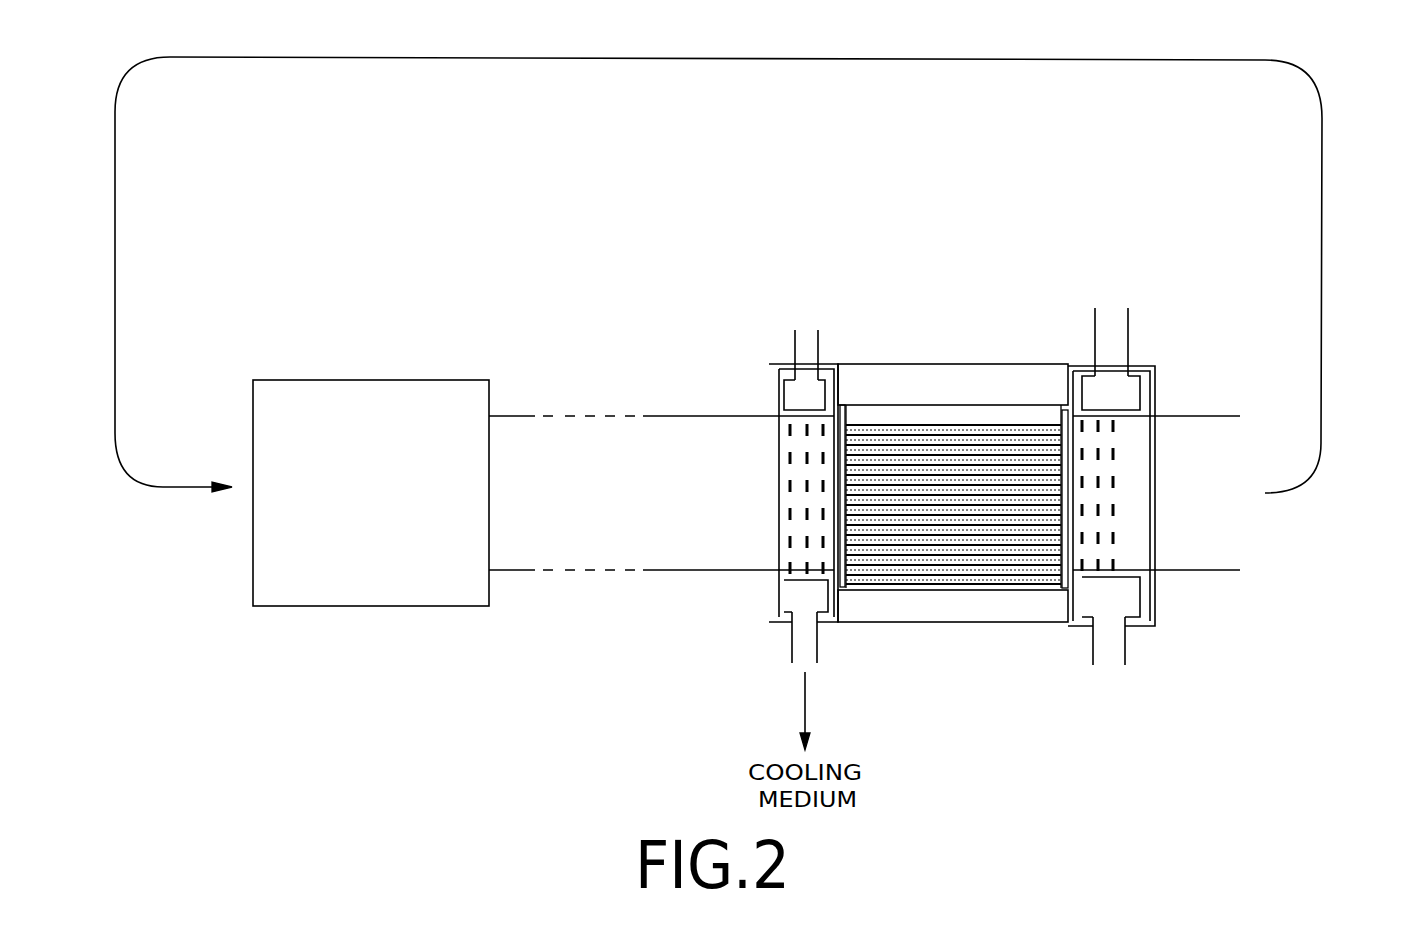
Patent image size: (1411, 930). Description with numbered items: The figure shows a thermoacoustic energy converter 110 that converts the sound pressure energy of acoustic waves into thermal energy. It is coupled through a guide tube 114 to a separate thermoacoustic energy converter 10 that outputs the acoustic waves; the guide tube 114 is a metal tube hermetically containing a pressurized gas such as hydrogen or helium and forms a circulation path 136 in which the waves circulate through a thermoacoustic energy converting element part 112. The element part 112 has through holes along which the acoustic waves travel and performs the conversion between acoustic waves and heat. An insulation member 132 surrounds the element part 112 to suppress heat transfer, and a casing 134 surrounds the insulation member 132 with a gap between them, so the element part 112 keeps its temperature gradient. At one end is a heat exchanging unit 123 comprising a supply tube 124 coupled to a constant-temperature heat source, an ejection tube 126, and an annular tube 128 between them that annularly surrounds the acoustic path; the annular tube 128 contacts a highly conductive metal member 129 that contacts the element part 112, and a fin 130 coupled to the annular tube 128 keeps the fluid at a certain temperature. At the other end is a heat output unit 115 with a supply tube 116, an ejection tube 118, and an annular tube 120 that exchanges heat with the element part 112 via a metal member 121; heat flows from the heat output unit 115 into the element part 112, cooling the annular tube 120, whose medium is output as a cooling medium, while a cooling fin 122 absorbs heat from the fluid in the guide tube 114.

The thermoacoustic energy converter 10 is at (372, 381).
The thermoacoustic energy converter 110 is at (975, 533).
The thermoacoustic energy converting element part 112 is at (1000, 562).
The guide tube 114 is at (655, 572).
The heat output unit 115 is at (742, 599).
The supply tube 116 is at (805, 330).
The ejection tube 118 is at (802, 665).
The annular tube 120 is at (790, 397).
The metal member 121 is at (843, 404).
The cooling fin 122 is at (796, 548).
The heat exchanging unit 123 is at (1200, 656).
The supply tube 124 is at (1112, 330).
The ejection tube 126 is at (1115, 668).
The annular tube 128 is at (1120, 390).
The metal member 129 is at (1066, 410).
The fin 130 is at (1103, 535).
The insulation member 132 is at (1022, 418).
The casing 134 is at (918, 365).
The circulation path 136 is at (1322, 123).